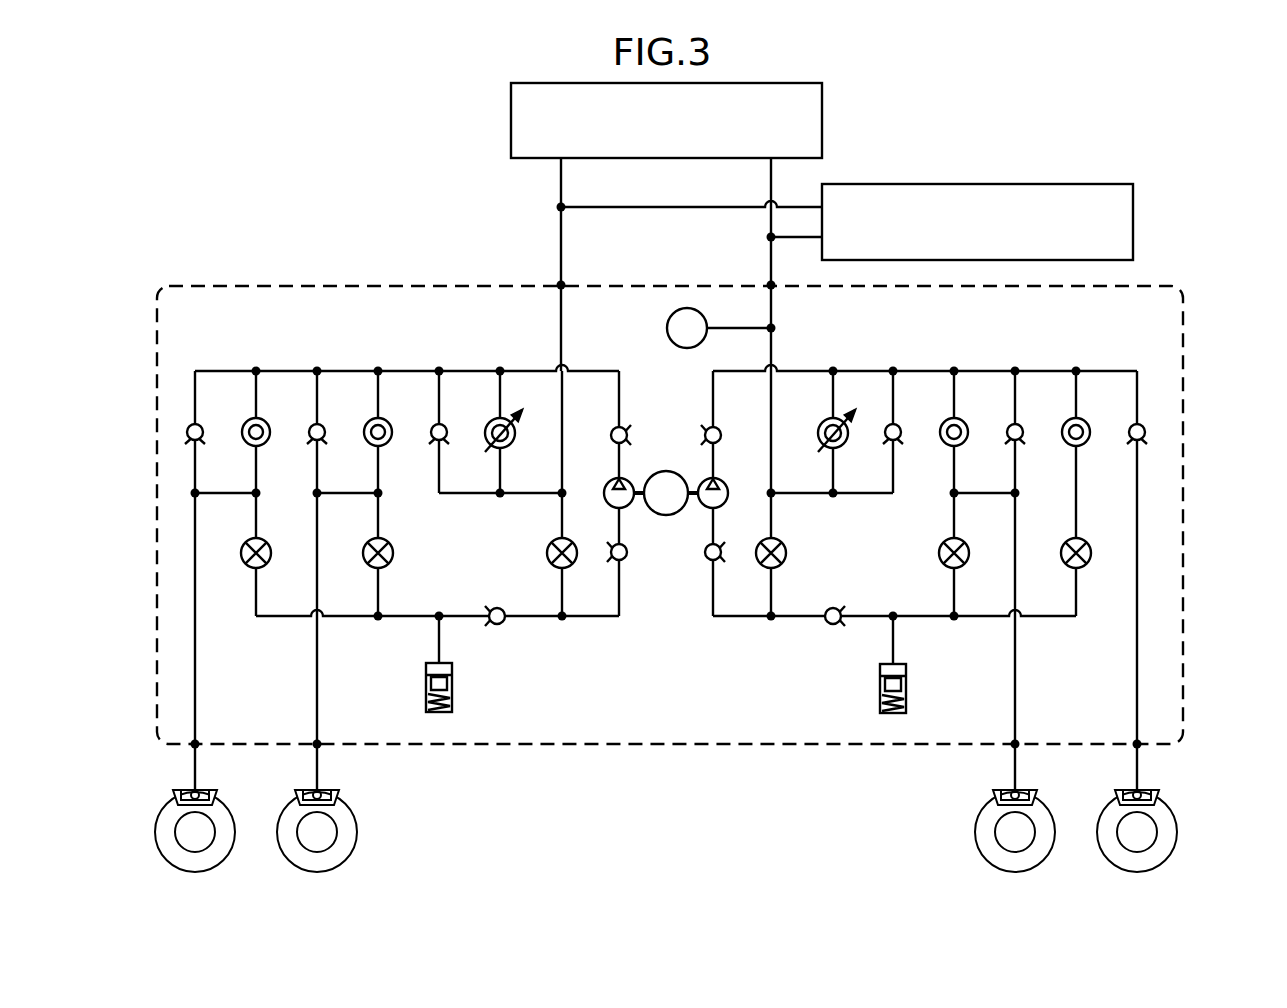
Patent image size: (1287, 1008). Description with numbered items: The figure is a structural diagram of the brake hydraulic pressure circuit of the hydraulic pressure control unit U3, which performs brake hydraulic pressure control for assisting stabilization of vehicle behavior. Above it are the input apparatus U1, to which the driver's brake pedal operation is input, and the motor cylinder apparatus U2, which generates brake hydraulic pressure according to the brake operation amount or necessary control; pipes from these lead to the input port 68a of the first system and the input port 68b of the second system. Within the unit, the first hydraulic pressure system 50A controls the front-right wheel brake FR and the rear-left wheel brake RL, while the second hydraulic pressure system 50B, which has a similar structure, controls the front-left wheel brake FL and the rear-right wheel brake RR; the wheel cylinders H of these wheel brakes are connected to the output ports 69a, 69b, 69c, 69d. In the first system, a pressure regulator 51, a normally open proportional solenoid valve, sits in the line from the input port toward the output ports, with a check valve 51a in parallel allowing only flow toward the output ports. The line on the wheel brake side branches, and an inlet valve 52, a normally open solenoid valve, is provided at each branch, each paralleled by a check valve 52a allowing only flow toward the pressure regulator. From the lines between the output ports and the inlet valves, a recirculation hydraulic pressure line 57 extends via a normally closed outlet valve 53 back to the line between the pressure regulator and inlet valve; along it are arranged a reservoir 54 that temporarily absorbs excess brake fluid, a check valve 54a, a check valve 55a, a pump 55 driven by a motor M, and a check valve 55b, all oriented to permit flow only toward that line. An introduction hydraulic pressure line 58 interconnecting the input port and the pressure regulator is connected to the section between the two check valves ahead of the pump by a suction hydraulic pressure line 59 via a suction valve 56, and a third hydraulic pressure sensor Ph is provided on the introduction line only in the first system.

The input apparatus U1 is at (824, 120).
The motor cylinder apparatus U2 is at (1060, 184).
The hydraulic pressure control unit U3 is at (1185, 340).
The first hydraulic pressure system 50A is at (1043, 343).
The second hydraulic pressure system 50B is at (290, 343).
The pressure regulator 51 is at (506, 446).
The check valve 51a is at (444, 425).
The inlet valve 52 is at (264, 424).
The check valve 52a is at (199, 426).
The outlet valve 53 is at (248, 544).
The reservoir 54 is at (426, 684).
The check valve 54a is at (500, 628).
The pump 55 is at (610, 483).
The check valve 55a is at (614, 545).
The check valve 55b is at (614, 428).
The suction valve 56 is at (548, 553).
The recirculation hydraulic pressure line 57 is at (600, 371).
The introduction hydraulic pressure line 58 is at (562, 398).
The suction hydraulic pressure line 59 is at (562, 590).
The input port 68a is at (771, 284).
The input port 68b is at (561, 284).
The output port 69a is at (1139, 746).
The output port 69b is at (1017, 746).
The output port 69c is at (319, 746).
The output port 69d is at (197, 746).
The wheel cylinder H is at (218, 790).
The front-left wheel brake FL is at (230, 848).
The front-right wheel brake FR is at (1172, 848).
The rear-left wheel brake RL is at (1050, 848).
The rear-right wheel brake RR is at (352, 848).
The motor M is at (666, 493).
The third hydraulic pressure sensor Ph is at (719, 328).